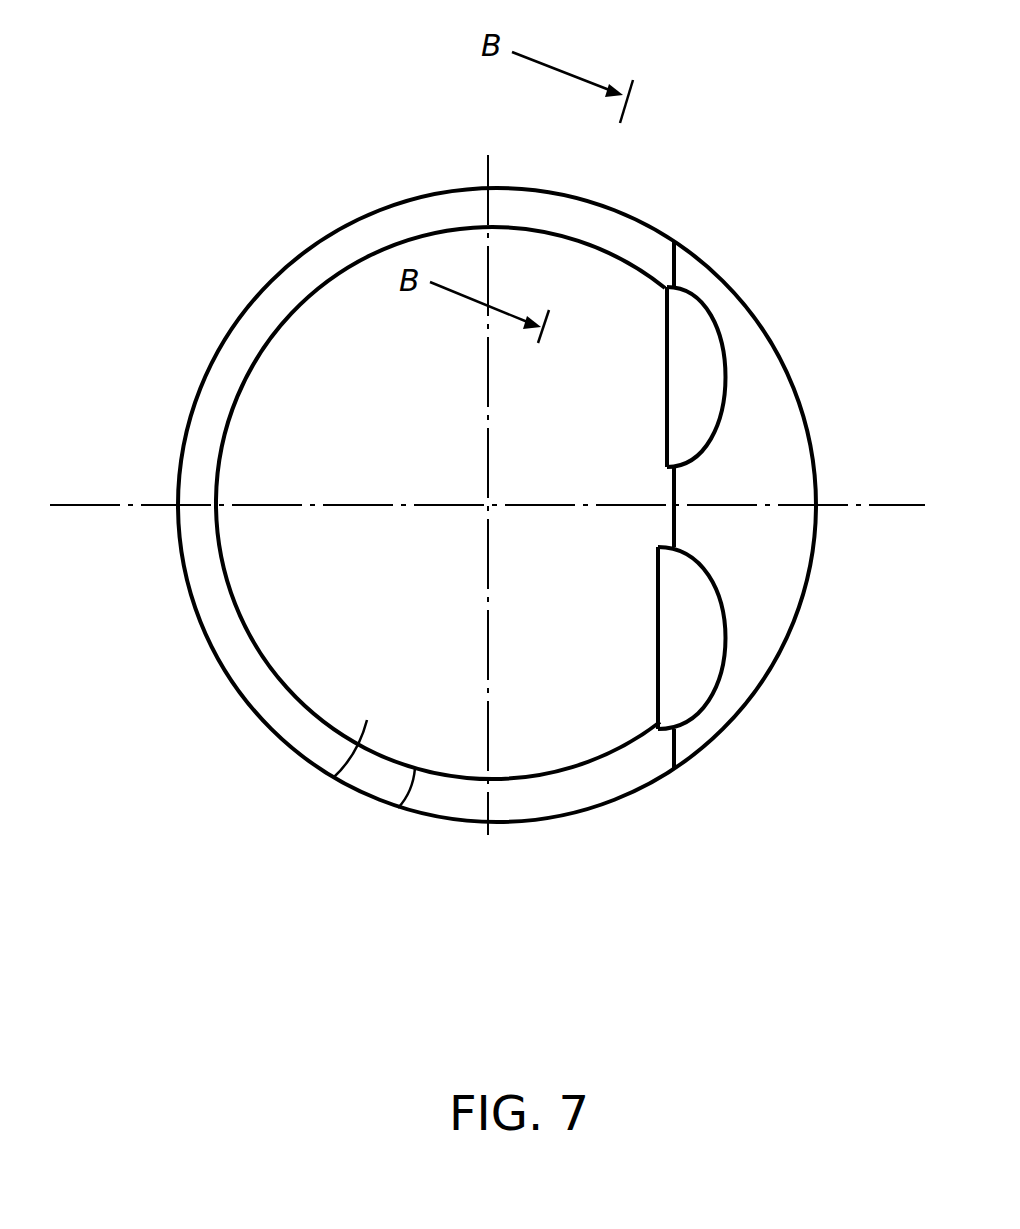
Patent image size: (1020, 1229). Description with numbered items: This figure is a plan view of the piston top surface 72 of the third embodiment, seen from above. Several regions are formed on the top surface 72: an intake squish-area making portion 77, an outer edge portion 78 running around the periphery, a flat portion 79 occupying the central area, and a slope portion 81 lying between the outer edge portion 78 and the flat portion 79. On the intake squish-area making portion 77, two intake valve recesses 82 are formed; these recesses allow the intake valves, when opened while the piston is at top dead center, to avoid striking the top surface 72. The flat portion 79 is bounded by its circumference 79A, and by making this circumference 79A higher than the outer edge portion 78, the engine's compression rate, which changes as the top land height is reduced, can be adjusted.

The piston top surface 72 is at (283, 118).
The intake squish-area making portion 77 is at (780, 598).
The outer edge portion 78 is at (238, 315).
The flat portion 79 is at (323, 775).
The circumference of the flat portion 79A is at (398, 806).
The slope portion 81 is at (307, 263).
The intake valve recesses 82 is at (688, 446).